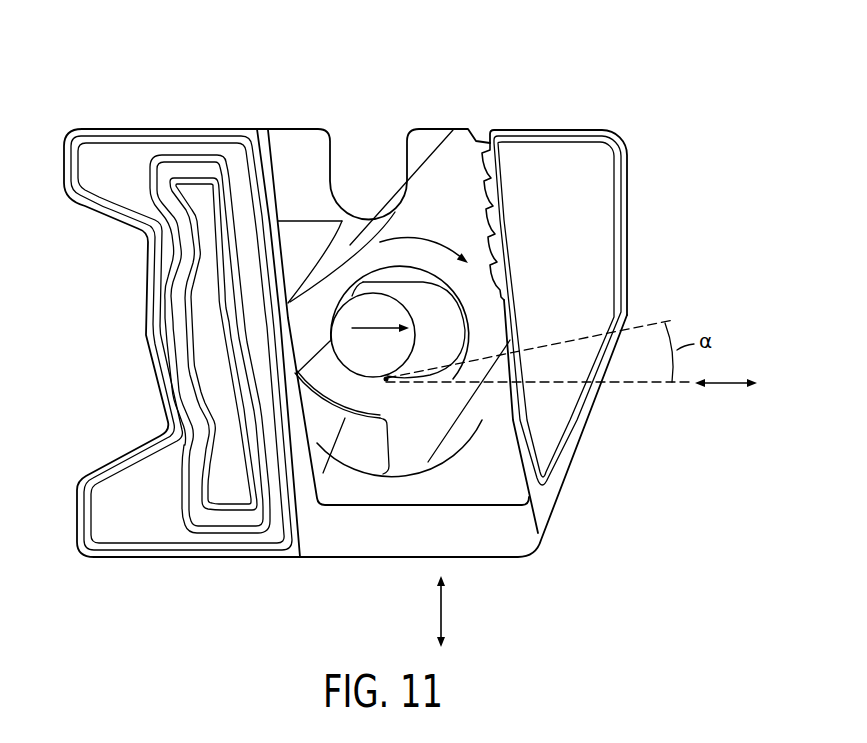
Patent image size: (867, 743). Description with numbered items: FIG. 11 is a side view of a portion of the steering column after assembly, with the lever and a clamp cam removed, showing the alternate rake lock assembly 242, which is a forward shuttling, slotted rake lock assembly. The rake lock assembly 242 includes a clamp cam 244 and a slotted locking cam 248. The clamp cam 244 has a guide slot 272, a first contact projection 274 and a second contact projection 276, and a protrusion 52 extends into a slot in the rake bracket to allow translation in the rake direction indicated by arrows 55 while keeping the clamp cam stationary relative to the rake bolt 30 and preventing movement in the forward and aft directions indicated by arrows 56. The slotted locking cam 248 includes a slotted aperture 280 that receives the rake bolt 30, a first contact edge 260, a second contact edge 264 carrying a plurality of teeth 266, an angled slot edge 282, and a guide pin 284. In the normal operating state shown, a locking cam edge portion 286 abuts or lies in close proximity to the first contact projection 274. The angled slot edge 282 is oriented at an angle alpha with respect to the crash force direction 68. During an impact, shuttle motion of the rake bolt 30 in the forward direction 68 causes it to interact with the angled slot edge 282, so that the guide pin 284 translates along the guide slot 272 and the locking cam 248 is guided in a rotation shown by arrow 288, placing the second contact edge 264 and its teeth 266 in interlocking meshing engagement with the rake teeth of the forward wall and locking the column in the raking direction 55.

The rake lock assembly 242 is at (573, 85).
The clamp cam 244 is at (104, 160).
The protrusion 52 is at (205, 313).
The first contact edge 260 is at (332, 330).
The first contact projection 274 is at (305, 233).
The locking cam edge portion 286 is at (348, 243).
The arrow 288 is at (428, 238).
The second contact edge 264 is at (483, 141).
The teeth 266 is at (496, 211).
The slotted aperture 280 is at (474, 291).
The angled slot edge 282 is at (422, 368).
The forward direction 68 is at (380, 330).
The rake bolt 30 is at (378, 368).
The slotted locking cam 248 is at (464, 382).
The guide slot 272 is at (361, 448).
The guide pin 284 is at (423, 447).
The second contact projection 276 is at (317, 440).
The arrows 55 is at (443, 618).
The arrows 56 is at (724, 386).